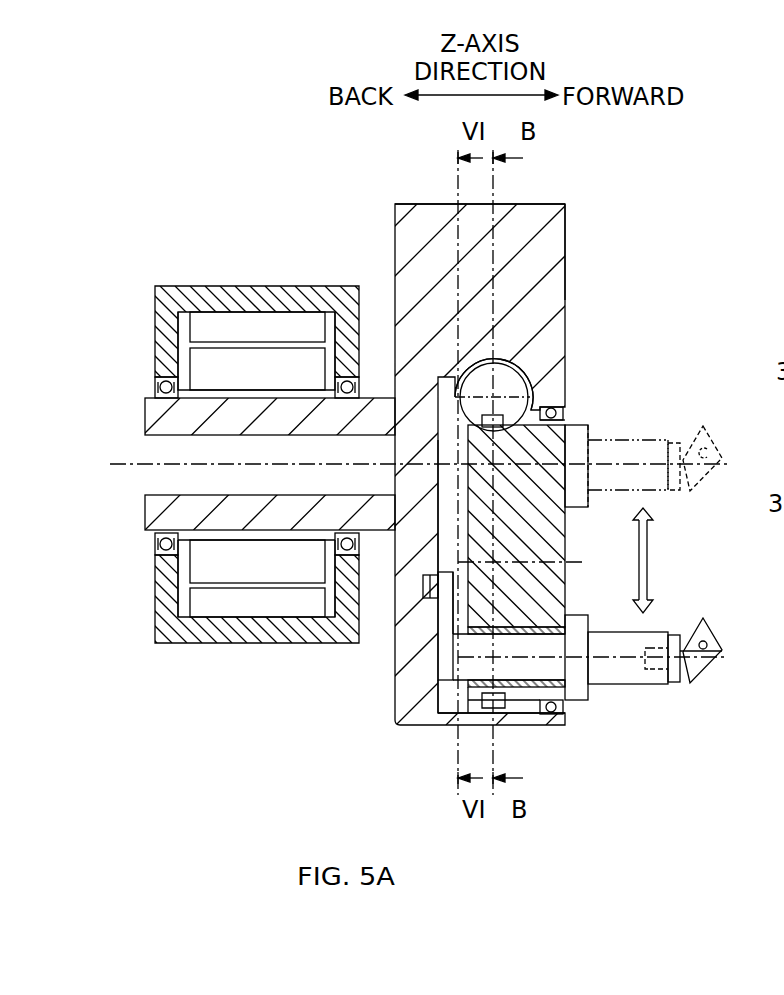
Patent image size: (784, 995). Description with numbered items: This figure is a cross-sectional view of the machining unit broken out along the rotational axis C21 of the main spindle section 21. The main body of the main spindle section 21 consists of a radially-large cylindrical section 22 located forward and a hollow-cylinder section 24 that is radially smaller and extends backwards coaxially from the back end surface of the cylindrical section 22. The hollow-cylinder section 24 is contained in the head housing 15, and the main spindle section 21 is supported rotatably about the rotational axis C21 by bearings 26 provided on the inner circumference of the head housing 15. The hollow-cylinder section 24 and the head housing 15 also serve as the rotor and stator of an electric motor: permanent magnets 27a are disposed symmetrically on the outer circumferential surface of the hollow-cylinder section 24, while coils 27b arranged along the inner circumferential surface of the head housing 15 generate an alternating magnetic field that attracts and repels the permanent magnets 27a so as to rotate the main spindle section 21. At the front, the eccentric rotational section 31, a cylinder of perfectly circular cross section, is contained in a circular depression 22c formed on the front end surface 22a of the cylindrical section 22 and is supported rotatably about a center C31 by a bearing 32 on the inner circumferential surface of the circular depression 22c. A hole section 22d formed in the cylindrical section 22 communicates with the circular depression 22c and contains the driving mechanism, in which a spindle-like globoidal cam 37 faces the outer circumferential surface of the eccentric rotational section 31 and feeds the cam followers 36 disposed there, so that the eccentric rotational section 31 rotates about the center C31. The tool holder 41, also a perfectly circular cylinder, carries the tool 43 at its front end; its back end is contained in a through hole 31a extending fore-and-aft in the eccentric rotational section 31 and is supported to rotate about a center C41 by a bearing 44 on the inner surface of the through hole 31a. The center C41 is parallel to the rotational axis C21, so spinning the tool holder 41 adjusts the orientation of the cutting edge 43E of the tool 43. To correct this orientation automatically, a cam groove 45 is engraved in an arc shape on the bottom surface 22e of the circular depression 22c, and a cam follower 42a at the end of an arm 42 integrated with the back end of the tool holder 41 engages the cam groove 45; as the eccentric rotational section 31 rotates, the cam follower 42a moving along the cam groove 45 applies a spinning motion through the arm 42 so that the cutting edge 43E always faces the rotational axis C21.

The head housing 15 is at (283, 284).
The main spindle section 21 is at (392, 210).
The cylindrical section 22 is at (565, 226).
The front end surface 22a is at (565, 264).
The circular depression 22c is at (453, 518).
The hole section 22d is at (548, 362).
The bottom surface 22e is at (443, 488).
The hollow-cylinder section 24 is at (143, 410).
The bearings 26 is at (160, 378).
The permanent magnet 27a is at (205, 360).
The coils 27b is at (246, 320).
The eccentric rotational section 31 is at (568, 576).
The through hole 31a is at (556, 630).
The bearing 32 is at (566, 420).
The cam followers 36 is at (562, 410).
The globoidal cam 37 is at (485, 380).
The tool holder 41 is at (525, 690).
The arm 42 is at (442, 652).
The cam follower 42a is at (444, 614).
The tool 43 is at (698, 667).
The cutting edge 43E is at (700, 618).
The bearing 44 is at (589, 622).
The cam groove 45 is at (427, 606).
The rotational axis C21 is at (322, 463).
The center C31 is at (578, 556).
The center C41 is at (568, 668).